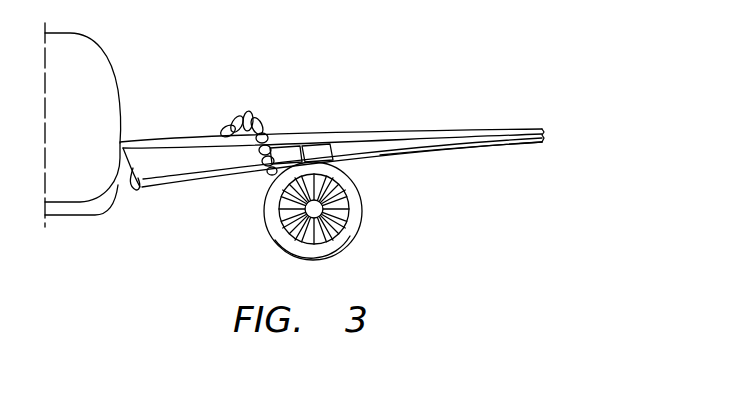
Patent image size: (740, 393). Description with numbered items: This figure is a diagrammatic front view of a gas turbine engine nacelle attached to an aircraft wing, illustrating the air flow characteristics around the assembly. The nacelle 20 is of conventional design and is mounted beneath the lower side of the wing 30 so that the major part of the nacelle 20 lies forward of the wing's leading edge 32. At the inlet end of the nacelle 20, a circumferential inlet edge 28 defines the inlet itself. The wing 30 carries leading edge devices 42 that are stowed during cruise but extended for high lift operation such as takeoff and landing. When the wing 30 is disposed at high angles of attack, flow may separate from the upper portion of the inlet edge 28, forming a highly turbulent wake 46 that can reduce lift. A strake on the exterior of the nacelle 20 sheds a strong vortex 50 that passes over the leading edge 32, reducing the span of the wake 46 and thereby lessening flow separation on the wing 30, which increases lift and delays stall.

The nacelle 20 is at (304, 227).
The circumferential inlet edge 28 is at (353, 230).
The wing 30 is at (495, 152).
The leading edge 32 is at (172, 181).
The leading edge devices 42 is at (411, 152).
The turbulent wake 46 is at (304, 134).
The vortex 50 is at (235, 116).